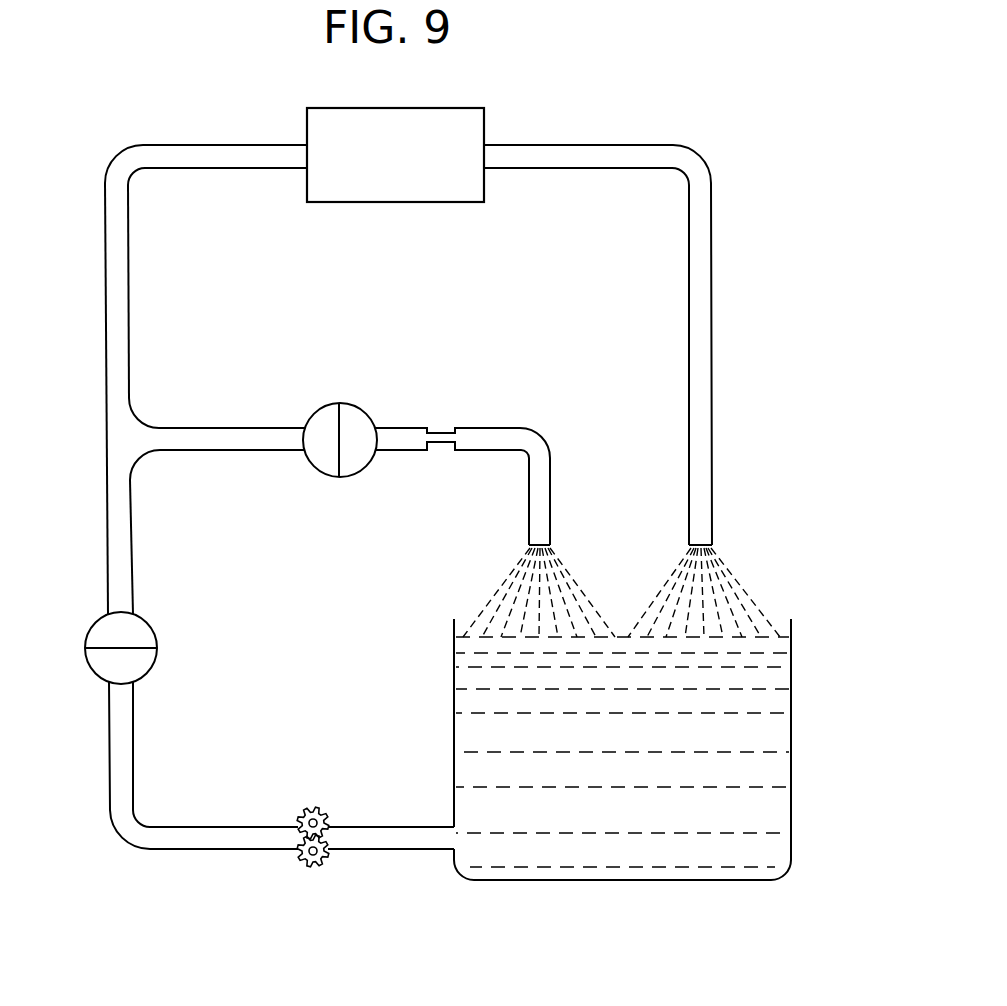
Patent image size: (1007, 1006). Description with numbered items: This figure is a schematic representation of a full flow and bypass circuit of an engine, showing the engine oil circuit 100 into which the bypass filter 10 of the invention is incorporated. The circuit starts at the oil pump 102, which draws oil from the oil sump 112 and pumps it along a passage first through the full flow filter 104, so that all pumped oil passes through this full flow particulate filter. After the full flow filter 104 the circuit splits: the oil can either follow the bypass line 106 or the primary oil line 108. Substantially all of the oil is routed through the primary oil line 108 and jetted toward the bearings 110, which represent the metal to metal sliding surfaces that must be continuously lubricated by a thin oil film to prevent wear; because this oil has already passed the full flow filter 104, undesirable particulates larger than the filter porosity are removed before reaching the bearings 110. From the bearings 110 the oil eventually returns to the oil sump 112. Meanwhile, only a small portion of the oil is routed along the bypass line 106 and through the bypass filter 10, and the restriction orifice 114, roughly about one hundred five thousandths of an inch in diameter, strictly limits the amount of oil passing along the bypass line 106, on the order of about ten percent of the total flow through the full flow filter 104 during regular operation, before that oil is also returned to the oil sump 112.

The engine oil circuit 100 is at (145, 933).
The oil pump 102 is at (318, 808).
The full flow filter 104 is at (93, 632).
The bypass line 106 is at (226, 437).
The primary oil line 108 is at (112, 328).
The bearings 110 is at (323, 113).
The oil sump 112 is at (783, 732).
The restriction orifice 114 is at (440, 430).
The bypass filter 10 is at (355, 418).